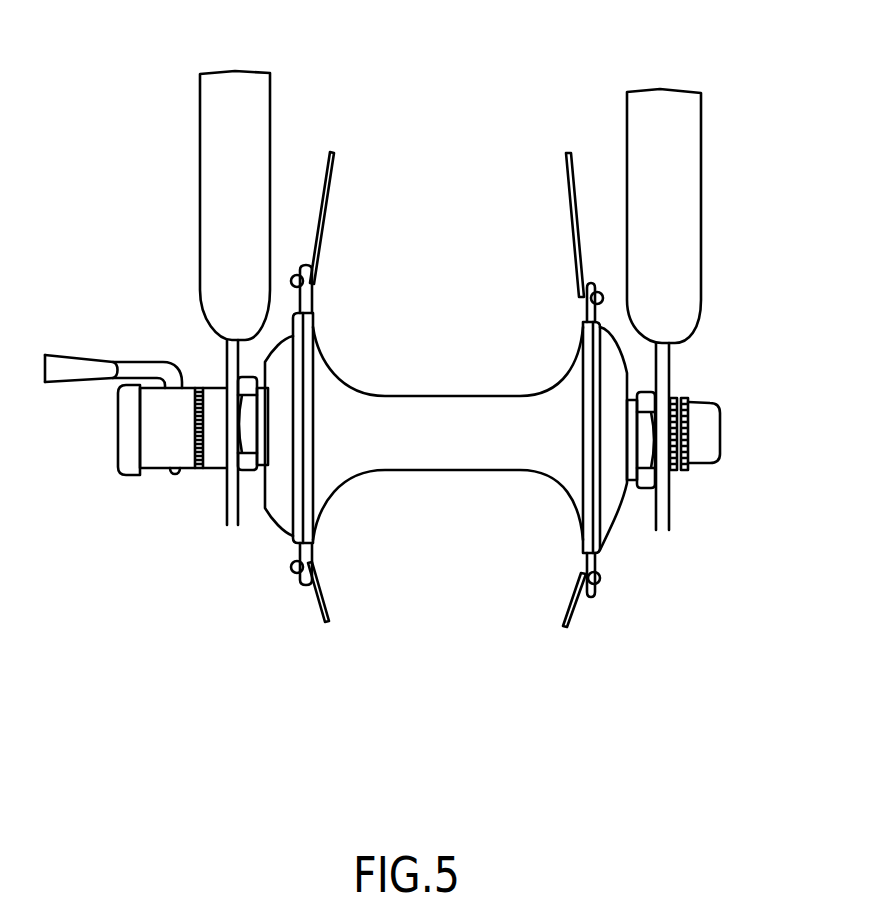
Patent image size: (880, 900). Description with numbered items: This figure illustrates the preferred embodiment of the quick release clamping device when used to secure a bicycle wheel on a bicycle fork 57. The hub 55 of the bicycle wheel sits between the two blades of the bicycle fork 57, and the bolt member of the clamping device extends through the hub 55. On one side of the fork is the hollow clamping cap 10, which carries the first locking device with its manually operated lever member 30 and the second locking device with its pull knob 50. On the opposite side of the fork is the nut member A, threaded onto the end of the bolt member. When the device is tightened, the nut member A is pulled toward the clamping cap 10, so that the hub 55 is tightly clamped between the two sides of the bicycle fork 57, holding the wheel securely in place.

The lever member 30 is at (85, 365).
The bicycle fork 57 is at (253, 140).
The pull knob 50 is at (127, 475).
The hollow clamping cap 10 is at (162, 437).
The hub 55 is at (428, 458).
The nut member A is at (707, 428).